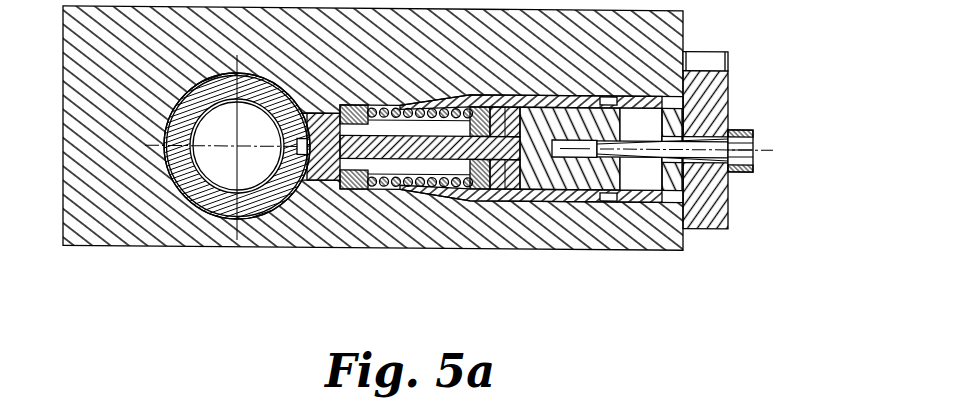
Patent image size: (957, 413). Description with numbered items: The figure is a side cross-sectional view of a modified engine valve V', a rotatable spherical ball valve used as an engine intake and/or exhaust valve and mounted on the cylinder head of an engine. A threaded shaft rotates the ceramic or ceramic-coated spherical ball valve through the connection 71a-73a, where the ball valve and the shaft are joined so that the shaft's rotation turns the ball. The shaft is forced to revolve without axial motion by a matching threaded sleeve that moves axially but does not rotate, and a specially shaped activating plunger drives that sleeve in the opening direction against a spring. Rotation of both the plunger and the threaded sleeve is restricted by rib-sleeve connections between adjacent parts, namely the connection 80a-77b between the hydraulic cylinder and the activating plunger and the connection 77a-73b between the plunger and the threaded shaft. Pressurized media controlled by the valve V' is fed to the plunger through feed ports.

The connection 71a is at (270, 185).
The connection 73a is at (300, 158).
The rib-sleeve connection 73b is at (515, 188).
The rib-sleeve connection 77a is at (520, 193).
The rib-sleeve connection 77b is at (563, 197).
The rib-sleeve connection 80a is at (655, 202).
The modified engine valve V' is at (722, 138).